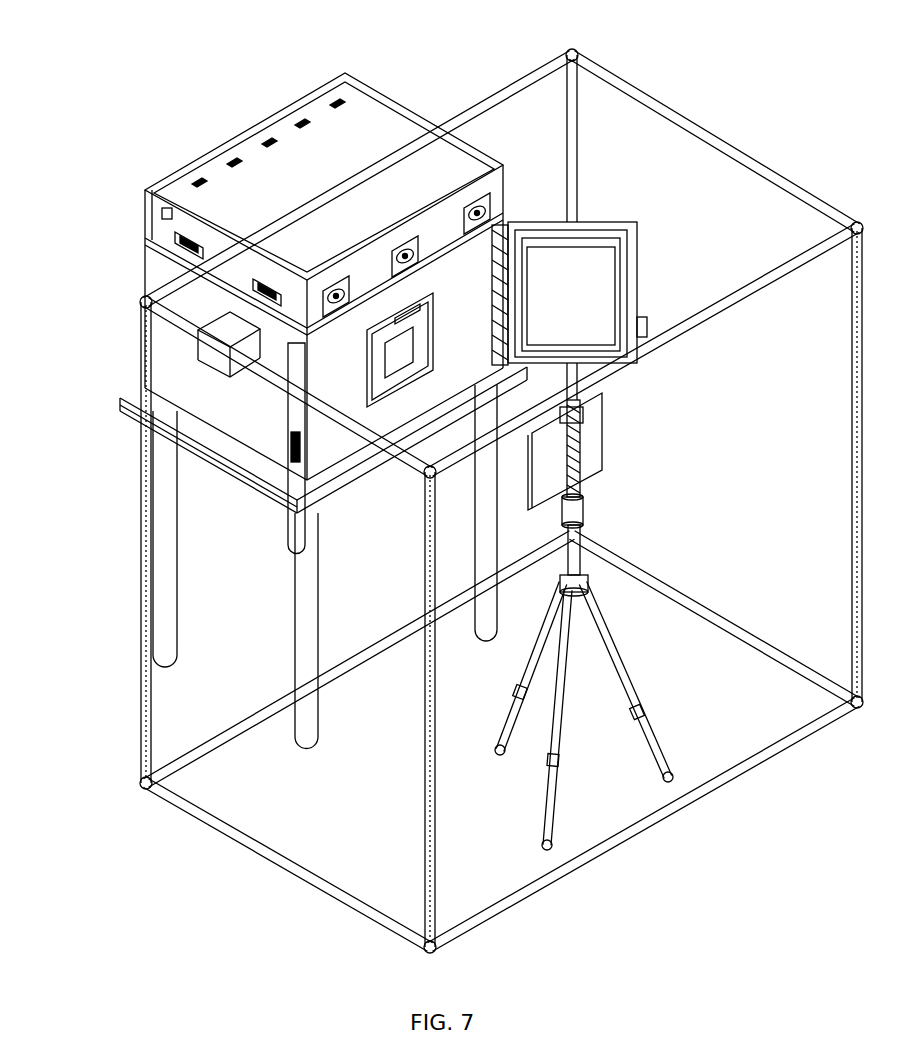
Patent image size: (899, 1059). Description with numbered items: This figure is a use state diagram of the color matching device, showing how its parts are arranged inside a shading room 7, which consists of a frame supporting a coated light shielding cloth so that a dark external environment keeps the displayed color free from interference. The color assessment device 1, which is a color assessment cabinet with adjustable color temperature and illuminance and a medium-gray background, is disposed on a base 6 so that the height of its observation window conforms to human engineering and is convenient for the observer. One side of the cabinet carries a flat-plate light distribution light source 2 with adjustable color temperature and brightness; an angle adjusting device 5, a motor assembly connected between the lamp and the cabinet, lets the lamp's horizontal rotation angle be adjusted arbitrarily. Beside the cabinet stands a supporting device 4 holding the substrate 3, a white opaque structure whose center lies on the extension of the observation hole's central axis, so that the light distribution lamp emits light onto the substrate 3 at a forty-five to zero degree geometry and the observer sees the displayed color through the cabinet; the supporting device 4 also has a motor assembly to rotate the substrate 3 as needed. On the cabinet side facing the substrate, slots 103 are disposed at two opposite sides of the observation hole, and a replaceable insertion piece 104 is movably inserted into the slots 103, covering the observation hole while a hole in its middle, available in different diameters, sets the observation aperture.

The color assessment device 1 is at (260, 251).
The light distribution light source 2 is at (588, 265).
The substrate 3 is at (592, 458).
The supporting device 4 is at (560, 800).
The angle adjusting device 5 is at (200, 330).
The base 6 is at (167, 527).
The shading room 7 is at (240, 840).
The slot 103 is at (413, 306).
The insertion piece 104 is at (367, 398).